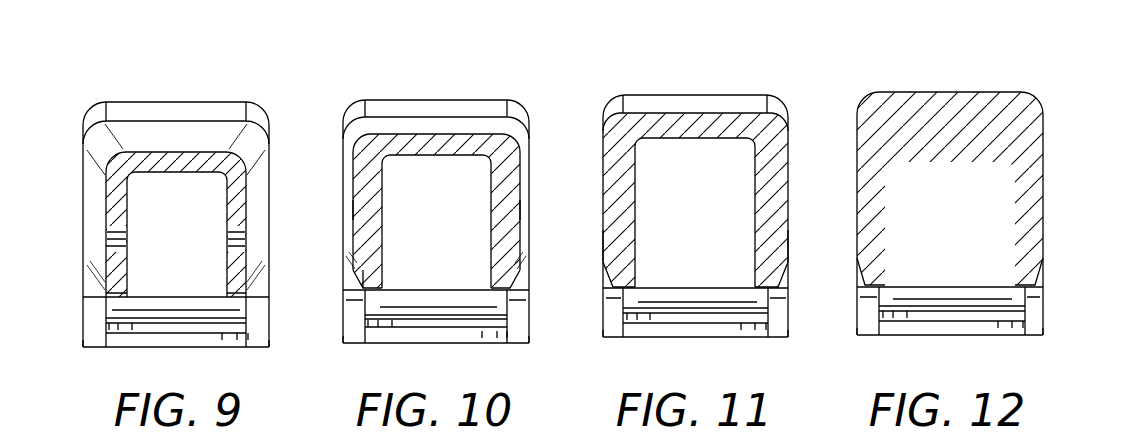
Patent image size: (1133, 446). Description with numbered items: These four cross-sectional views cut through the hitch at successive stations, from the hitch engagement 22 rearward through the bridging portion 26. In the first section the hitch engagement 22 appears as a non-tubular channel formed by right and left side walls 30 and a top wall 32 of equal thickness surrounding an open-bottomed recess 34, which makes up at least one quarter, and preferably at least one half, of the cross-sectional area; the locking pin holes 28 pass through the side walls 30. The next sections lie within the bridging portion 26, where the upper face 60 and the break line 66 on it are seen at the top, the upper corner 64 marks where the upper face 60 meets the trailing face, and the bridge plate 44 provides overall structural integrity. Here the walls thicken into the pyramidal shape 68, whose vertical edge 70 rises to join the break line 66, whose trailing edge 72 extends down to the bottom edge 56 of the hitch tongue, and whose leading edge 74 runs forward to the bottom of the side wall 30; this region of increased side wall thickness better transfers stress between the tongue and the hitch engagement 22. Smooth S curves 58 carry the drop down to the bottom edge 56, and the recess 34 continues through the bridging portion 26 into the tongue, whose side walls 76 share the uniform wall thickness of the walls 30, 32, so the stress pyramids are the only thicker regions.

In FIG. 9, the hitch engagement 22 is at (128, 136).
In FIG. 10, the bridging portion 26 is at (385, 118).
In FIG. 11, the bridging portion 26 is at (631, 100).
In FIG. 12, the bridging portion 26 is at (880, 78).
In FIG. 9, the locking pin holes 28 is at (117, 214).
In FIG. 9, the side walls 30 is at (117, 188).
In FIG. 10, the side walls 30 is at (363, 213).
In FIG. 9, the top wall 32 is at (200, 160).
In FIG. 10, the top wall 32 is at (465, 146).
In FIG. 9, the recess 34 is at (149, 247).
In FIG. 10, the recess 34 is at (425, 228).
In FIG. 11, the recess 34 is at (685, 222).
In FIG. 9, the bridge plate 44 is at (183, 327).
In FIG. 10, the bridge plate 44 is at (450, 325).
In FIG. 11, the bridge plate 44 is at (707, 321).
In FIG. 12, the bridge plate 44 is at (942, 109).
In FIG. 9, the bottom edge 56 is at (128, 348).
In FIG. 10, the bottom edge 56 is at (396, 344).
In FIG. 11, the bottom edge 56 is at (658, 338).
In FIG. 12, the bottom edge 56 is at (910, 336).
In FIG. 9, the S curves 58 is at (93, 316).
In FIG. 10, the S curves 58 is at (320, 317).
In FIG. 11, the S curves 58 is at (576, 299).
In FIG. 12, the S curves 58 is at (836, 292).
In FIG. 9, the upper face 60 is at (166, 110).
In FIG. 10, the upper face 60 is at (428, 108).
In FIG. 11, the upper face 60 is at (675, 106).
In FIG. 9, the upper corner 64 is at (128, 102).
In FIG. 10, the upper corner 64 is at (387, 100).
In FIG. 11, the upper corner 64 is at (645, 95).
In FIG. 12, the upper corner 64 is at (918, 92).
In FIG. 9, the break line 66 is at (200, 119).
In FIG. 10, the break line 66 is at (460, 115).
In FIG. 11, the break line 66 is at (711, 112).
In FIG. 9, the pyramidal shape 68 is at (83, 258).
In FIG. 10, the pyramidal shape 68 is at (317, 228).
In FIG. 11, the pyramidal shape 68 is at (568, 213).
In FIG. 11, the vertical edge 70 is at (603, 206).
In FIG. 12, the trailing edge 72 is at (860, 272).
In FIG. 9, the leading edge 74 is at (97, 280).
In FIG. 10, the leading edge 74 is at (320, 268).
In FIG. 9, the side walls 76 is at (92, 341).
In FIG. 10, the side walls 76 is at (522, 333).
In FIG. 11, the side walls 76 is at (780, 331).
In FIG. 12, the side walls 76 is at (1035, 326).